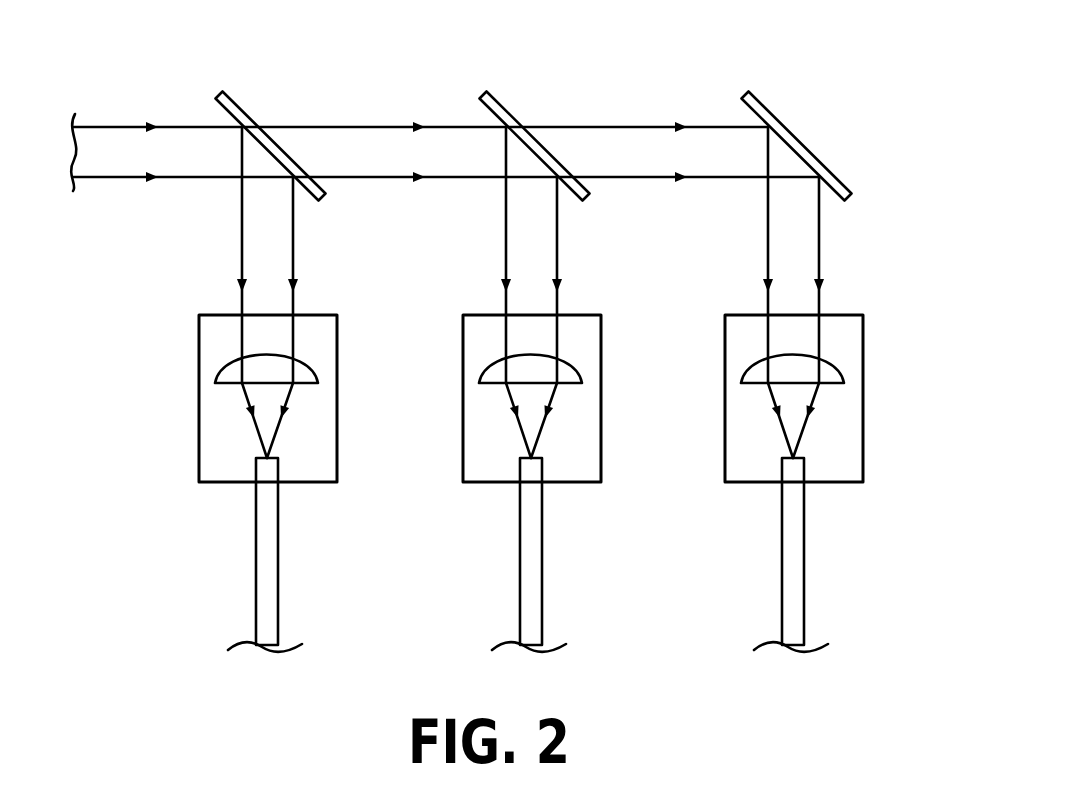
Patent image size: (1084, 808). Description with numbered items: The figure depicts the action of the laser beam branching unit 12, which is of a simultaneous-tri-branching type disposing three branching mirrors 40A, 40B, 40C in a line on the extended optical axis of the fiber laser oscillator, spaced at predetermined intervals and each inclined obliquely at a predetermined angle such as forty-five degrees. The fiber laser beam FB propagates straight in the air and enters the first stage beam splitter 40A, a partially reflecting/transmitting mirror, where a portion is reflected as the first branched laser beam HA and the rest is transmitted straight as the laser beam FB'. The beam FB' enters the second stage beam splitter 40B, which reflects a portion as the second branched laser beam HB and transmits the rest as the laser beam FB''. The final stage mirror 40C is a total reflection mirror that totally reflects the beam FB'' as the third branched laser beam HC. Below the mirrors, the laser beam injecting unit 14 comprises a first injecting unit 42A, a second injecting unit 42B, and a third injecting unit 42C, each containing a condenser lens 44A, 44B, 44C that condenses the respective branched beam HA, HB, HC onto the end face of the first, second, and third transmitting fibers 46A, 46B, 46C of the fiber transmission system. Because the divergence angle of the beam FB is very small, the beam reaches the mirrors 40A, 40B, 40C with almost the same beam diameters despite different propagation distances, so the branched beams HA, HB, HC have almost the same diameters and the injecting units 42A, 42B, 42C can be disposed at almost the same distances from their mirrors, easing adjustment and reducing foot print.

The laser beam branching unit 12 is at (508, 109).
The laser beam injecting unit 14 is at (158, 405).
The first stage beam splitter 40A is at (242, 100).
The second stage beam splitter 40B is at (506, 100).
The final stage branching mirror 40C is at (769, 100).
The first injecting unit 42A is at (307, 364).
The second injecting unit 42B is at (571, 364).
The third injecting unit 42C is at (833, 364).
The condenser lens 44A is at (312, 368).
The condenser lens 44B is at (576, 368).
The condenser lens 44C is at (838, 368).
The first transmitting optical fiber 46A is at (256, 556).
The second transmitting fiber 46B is at (520, 556).
The third transmitting fiber 46C is at (782, 556).
The fiber laser beam FB is at (106, 83).
The transmitted laser beam FB' is at (343, 83).
The transmitted laser beam FB'' is at (617, 83).
The first branched laser beam HA is at (242, 232).
The second branched laser beam HB is at (506, 232).
The third branched laser beam HC is at (768, 232).